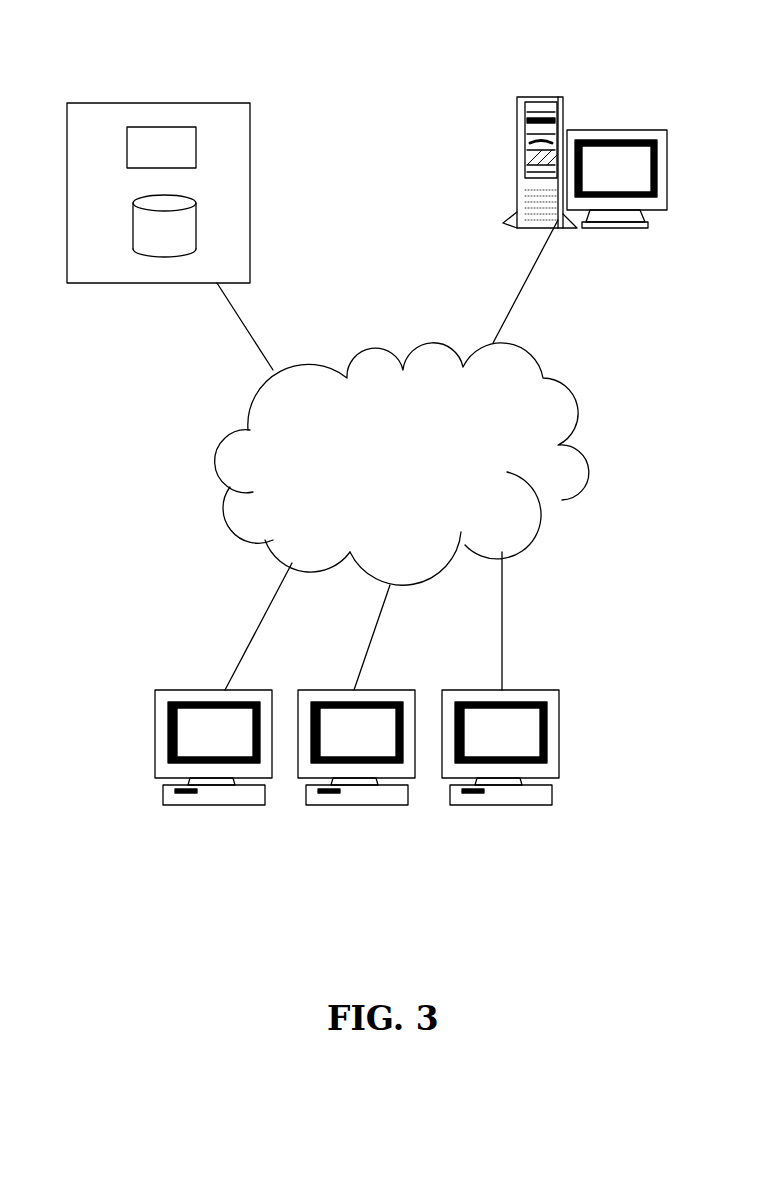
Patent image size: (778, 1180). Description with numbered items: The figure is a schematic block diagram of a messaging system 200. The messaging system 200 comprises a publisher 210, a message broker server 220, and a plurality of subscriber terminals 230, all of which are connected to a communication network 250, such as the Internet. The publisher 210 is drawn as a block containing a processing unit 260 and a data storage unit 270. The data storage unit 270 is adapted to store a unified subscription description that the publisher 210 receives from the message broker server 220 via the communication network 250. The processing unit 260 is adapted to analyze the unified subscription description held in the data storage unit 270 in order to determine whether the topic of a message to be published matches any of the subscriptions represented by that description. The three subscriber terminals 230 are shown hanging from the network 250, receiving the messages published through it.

The messaging system 200 is at (115, 875).
The publisher 210 is at (130, 103).
The processing unit 260 is at (161, 147).
The data storage unit 270 is at (164, 226).
The message broker server 220 is at (517, 161).
The communication network 250 is at (562, 500).
The subscriber terminals 230 is at (210, 805).